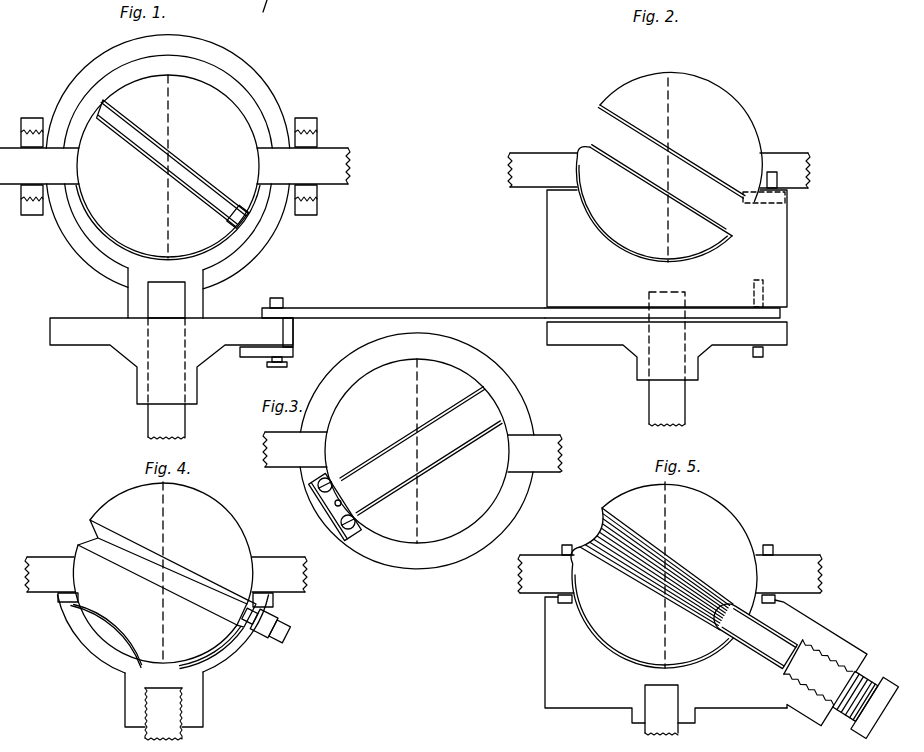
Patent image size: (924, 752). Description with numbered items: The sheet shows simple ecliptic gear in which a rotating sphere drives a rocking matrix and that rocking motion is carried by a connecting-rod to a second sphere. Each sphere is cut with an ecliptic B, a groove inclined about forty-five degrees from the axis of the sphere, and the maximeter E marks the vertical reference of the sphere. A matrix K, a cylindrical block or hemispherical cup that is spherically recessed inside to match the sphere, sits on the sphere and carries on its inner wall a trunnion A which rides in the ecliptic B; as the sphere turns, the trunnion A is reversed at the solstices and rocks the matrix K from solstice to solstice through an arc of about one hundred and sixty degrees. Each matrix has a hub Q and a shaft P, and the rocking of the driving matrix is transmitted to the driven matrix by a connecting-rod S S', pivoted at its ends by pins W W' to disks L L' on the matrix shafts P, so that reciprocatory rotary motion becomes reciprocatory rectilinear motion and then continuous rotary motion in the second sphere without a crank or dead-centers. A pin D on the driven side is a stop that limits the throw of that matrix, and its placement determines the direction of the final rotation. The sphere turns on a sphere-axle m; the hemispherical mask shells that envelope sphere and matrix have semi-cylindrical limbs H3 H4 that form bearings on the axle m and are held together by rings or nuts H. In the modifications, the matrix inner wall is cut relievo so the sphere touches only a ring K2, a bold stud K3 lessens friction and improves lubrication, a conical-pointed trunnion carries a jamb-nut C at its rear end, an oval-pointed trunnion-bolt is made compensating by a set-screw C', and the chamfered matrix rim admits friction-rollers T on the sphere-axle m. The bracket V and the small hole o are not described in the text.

In FIG. 1, the rings or nuts H is at (200, 34).
In FIG. 1, the semi-cylindrical limb H3 is at (169, 200).
In FIG. 1, the semi-cylindrical limb H4 is at (170, 139).
In FIG. 1, the sphere-axle m is at (175, 166).
In FIG. 2, the sphere-axle m is at (659, 170).
In FIG. 3, the sphere-axle m is at (412, 452).
In FIG. 4, the sphere-axle m is at (166, 574).
In FIG. 5, the sphere-axle m is at (670, 574).
In FIG. 1, the maximeter E is at (168, 166).
In FIG. 2, the maximeter E is at (669, 167).
In FIG. 3, the maximeter E is at (417, 451).
In FIG. 4, the maximeter E is at (163, 572).
In FIG. 5, the maximeter E is at (664, 575).
In FIG. 1, the ecliptic B is at (170, 163).
In FIG. 2, the ecliptic B is at (667, 170).
In FIG. 3, the ecliptic B is at (421, 451).
In FIG. 4, the ecliptic B is at (162, 572).
In FIG. 5, the ecliptic B is at (656, 569).
In FIG. 1, the trunnion A is at (238, 220).
In FIG. 2, the trunnion A is at (764, 205).
In FIG. 3, the trunnion A is at (335, 506).
In FIG. 4, the trunnion A is at (246, 614).
In FIG. 5, the trunnion A is at (755, 636).
In FIG. 1, the matrix K is at (165, 289).
In FIG. 2, the matrix K is at (667, 248).
In FIG. 4, the matrix K is at (163, 661).
In FIG. 5, the matrix K is at (666, 660).
In FIG. 1, the shaft of the matrix P is at (166, 360).
In FIG. 2, the shaft of the matrix P is at (667, 359).
In FIG. 4, the shaft of the matrix P is at (163, 714).
In FIG. 5, the shaft of the matrix P is at (661, 710).
In FIG. 1, the hub of the matrix Q is at (193, 298).
In FIG. 2, the hub of the matrix Q is at (643, 371).
In FIG. 4, the hub of the matrix Q is at (191, 699).
In FIG. 5, the hub of the matrix Q is at (687, 706).
In FIG. 1, the disk L is at (171, 361).
In FIG. 1, the bracket V is at (272, 342).
In FIG. 1, the pin W is at (279, 296).
In FIG. 1, the connecting-rod S is at (403, 306).
In FIG. 2, the connecting-rod end S' is at (670, 312).
In FIG. 2, the disk L' is at (667, 351).
In FIG. 2, the pin W' is at (763, 318).
In FIG. 2, the pin stop D is at (777, 180).
In FIG. 3, the hole o is at (339, 502).
In FIG. 4, the ring K2 is at (165, 599).
In FIG. 4, the bold stud K3 is at (157, 643).
In FIG. 4, the jamb-nut C is at (266, 621).
In FIG. 5, the set-screw C' is at (836, 669).
In FIG. 5, the friction-rollers T is at (666, 567).